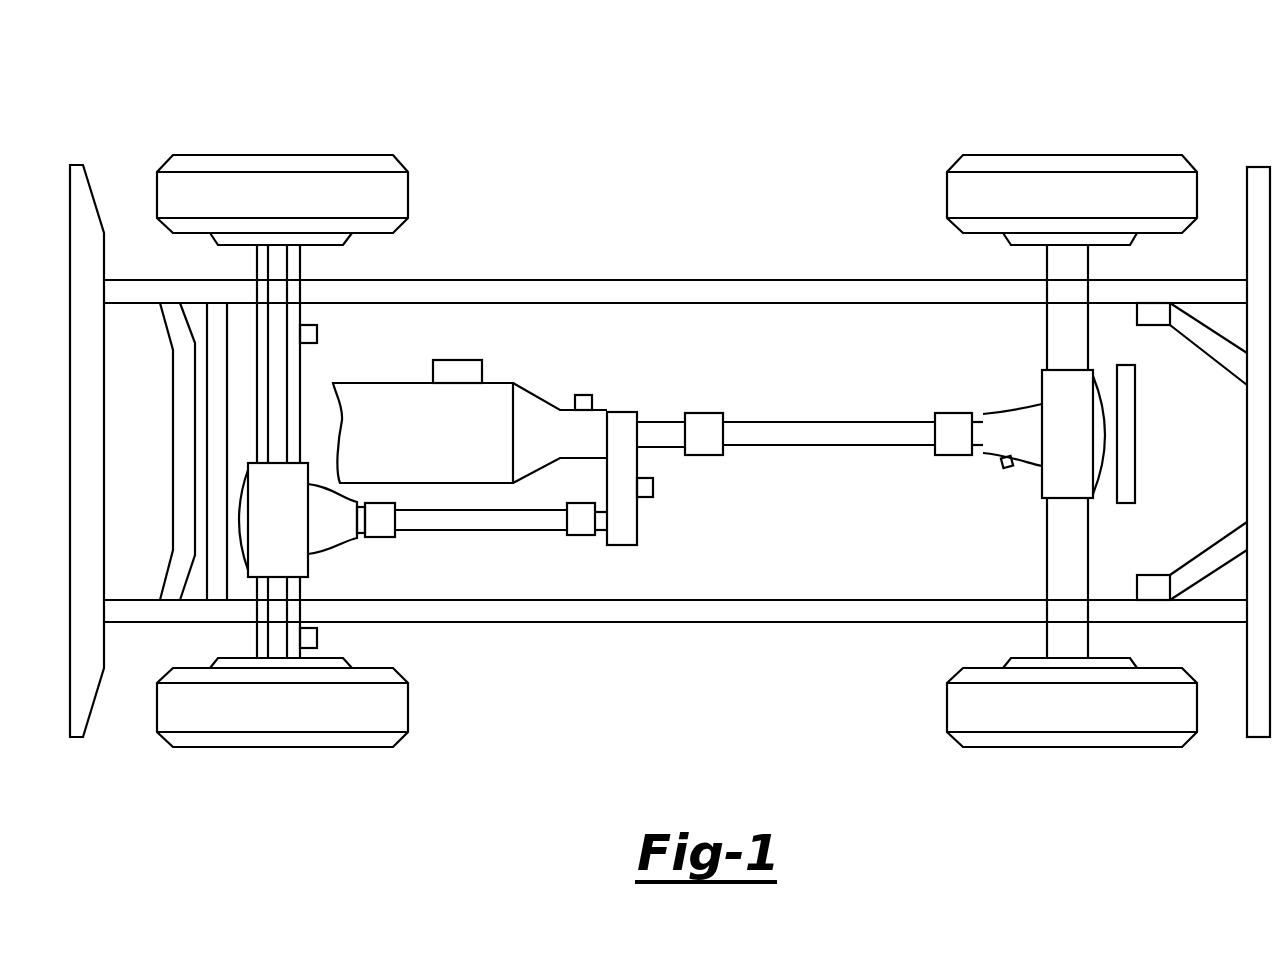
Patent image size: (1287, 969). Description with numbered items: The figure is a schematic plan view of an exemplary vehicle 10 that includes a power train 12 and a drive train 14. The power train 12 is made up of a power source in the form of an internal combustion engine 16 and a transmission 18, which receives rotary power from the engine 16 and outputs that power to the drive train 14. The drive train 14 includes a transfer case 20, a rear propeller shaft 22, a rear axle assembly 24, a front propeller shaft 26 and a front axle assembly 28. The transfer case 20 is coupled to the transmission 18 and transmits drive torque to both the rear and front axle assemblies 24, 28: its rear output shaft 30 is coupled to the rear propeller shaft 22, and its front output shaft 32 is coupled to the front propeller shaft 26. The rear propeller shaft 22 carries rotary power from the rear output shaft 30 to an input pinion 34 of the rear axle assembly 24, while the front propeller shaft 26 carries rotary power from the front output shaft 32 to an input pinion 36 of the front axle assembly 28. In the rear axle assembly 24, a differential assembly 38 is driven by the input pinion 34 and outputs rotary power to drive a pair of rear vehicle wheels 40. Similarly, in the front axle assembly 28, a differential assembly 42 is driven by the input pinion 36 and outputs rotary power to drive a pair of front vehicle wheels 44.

The vehicle 10 is at (670, 433).
The power train 12 is at (493, 395).
The drive train 14 is at (681, 458).
The internal combustion engine 16 is at (382, 383).
The transmission 18 is at (531, 398).
The transfer case 20 is at (622, 412).
The rear propeller shaft 22 is at (845, 447).
The rear axle assembly 24 is at (1056, 451).
The front propeller shaft 26 is at (486, 531).
The front axle assembly 28 is at (269, 451).
The rear output shaft 30 is at (670, 441).
The front output shaft 32 is at (600, 531).
The input pinion 34 is at (979, 456).
The input pinion 36 is at (362, 531).
The differential assembly 38 is at (1075, 438).
The rear vehicle wheels 40 is at (1000, 155).
The differential assembly 42 is at (266, 516).
The front vehicle wheels 44 is at (362, 155).